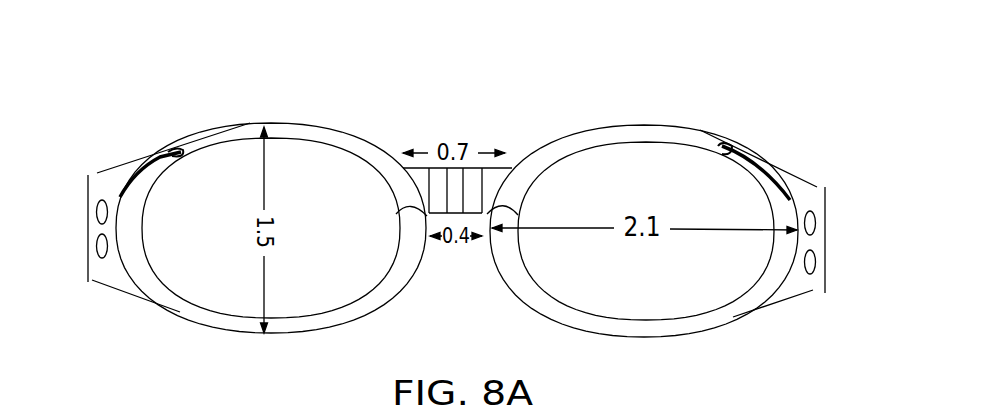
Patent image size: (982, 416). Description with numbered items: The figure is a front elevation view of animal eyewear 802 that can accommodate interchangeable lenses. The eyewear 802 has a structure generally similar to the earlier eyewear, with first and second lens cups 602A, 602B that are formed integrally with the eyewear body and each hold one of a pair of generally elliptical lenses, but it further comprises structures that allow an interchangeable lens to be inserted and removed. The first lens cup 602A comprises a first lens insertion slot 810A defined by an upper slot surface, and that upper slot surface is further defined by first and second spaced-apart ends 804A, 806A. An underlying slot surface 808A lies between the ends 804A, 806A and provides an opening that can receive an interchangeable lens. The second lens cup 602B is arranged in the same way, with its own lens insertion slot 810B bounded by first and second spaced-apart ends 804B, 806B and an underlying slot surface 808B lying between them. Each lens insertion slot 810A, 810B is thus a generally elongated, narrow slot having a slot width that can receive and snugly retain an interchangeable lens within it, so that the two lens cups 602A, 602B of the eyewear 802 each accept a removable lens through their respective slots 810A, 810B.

The animal eyewear 802 is at (466, 185).
The first lens cup 602A is at (175, 295).
The second lens cup 602B is at (712, 318).
The first spaced-apart end 804A is at (163, 150).
The first spaced-apart end 804B is at (725, 150).
The second spaced-apart end 806A is at (416, 220).
The second spaced-apart end 806B is at (503, 208).
The underlying slot surface 808A is at (308, 136).
The underlying slot surface 808B is at (652, 132).
The first lens insertion slot 810A is at (319, 304).
The lens insertion slot 810B is at (575, 299).